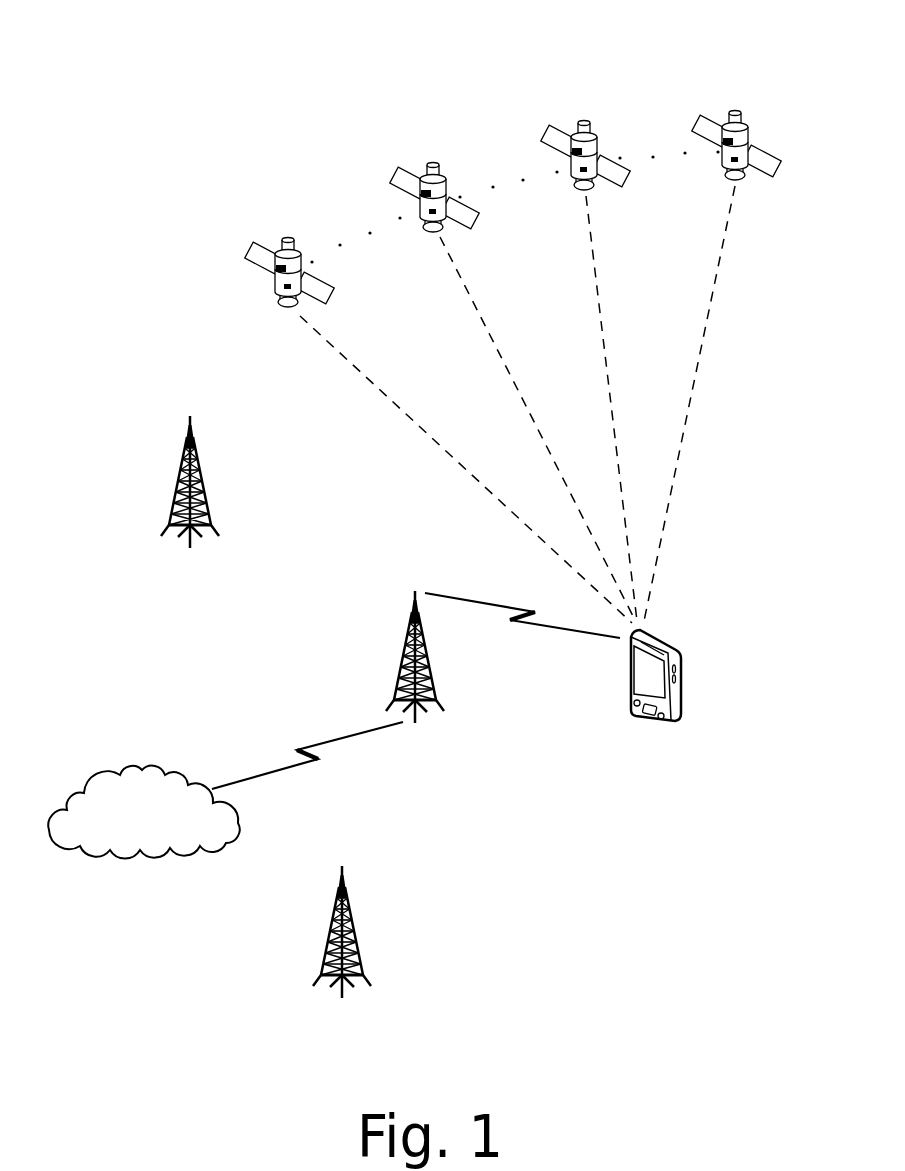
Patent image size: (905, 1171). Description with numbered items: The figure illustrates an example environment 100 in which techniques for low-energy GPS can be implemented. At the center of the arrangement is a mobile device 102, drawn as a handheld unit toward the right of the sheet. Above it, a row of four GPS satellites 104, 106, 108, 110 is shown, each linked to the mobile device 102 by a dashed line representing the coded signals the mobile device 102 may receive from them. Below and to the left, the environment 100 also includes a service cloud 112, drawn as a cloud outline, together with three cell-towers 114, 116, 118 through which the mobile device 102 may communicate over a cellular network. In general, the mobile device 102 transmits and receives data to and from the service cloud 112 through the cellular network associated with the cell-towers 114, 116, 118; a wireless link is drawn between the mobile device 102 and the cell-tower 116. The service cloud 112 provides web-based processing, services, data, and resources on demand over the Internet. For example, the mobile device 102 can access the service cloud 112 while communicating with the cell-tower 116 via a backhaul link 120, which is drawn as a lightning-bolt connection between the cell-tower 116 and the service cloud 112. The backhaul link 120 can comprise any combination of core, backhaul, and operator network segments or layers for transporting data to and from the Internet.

The environment 100 is at (127, 42).
The mobile device 102 is at (678, 651).
The GPS satellite 104 is at (302, 243).
The GPS satellite 106 is at (447, 168).
The GPS satellite 108 is at (598, 126).
The GPS satellite 110 is at (749, 116).
The service cloud 112 is at (160, 821).
The cell-tower 114 is at (186, 460).
The cell-tower 116 is at (409, 635).
The cell-tower 118 is at (336, 908).
The backhaul link 120 is at (266, 778).